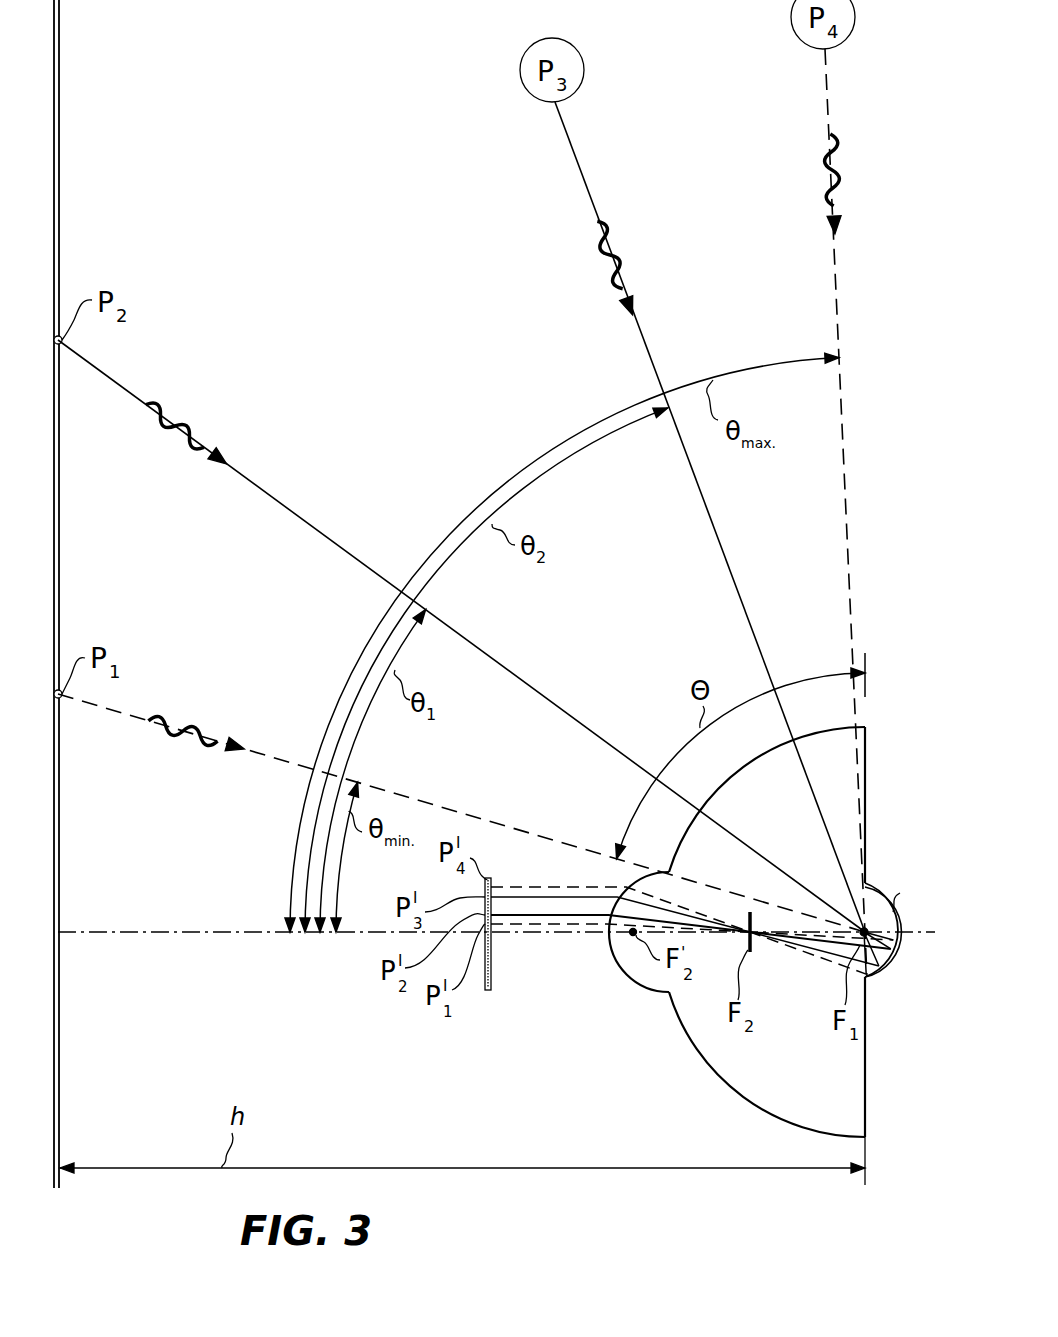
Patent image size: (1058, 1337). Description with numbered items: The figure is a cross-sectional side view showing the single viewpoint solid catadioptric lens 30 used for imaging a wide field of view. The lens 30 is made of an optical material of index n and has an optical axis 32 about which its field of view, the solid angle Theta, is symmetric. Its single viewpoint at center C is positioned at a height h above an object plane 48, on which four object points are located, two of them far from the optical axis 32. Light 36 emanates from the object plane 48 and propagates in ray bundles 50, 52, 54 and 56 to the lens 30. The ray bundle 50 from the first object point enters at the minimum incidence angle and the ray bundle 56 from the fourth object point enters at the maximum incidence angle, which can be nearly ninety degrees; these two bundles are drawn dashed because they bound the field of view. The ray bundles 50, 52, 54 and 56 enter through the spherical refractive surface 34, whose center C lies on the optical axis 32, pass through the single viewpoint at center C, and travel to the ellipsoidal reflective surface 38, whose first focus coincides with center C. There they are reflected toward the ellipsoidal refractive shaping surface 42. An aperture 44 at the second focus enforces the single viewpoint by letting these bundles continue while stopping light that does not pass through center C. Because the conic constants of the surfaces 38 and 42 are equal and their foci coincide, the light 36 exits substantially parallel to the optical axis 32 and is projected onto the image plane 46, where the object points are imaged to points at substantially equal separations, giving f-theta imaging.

The single viewpoint solid catadioptric lens 30 is at (707, 932).
The optical axis 32 is at (258, 935).
The spherical refractive surface 34 is at (699, 1054).
The light 36 is at (190, 423).
The ellipsoidal reflective surface 38 is at (868, 884).
The shaping surface 42 is at (620, 972).
The aperture 44 is at (753, 950).
The image plane 46 is at (492, 988).
The object plane 48 is at (60, 104).
The ray bundle 50 is at (108, 710).
The ray bundle 52 is at (283, 503).
The ray bundle 54 is at (642, 350).
The ray bundle 56 is at (832, 312).